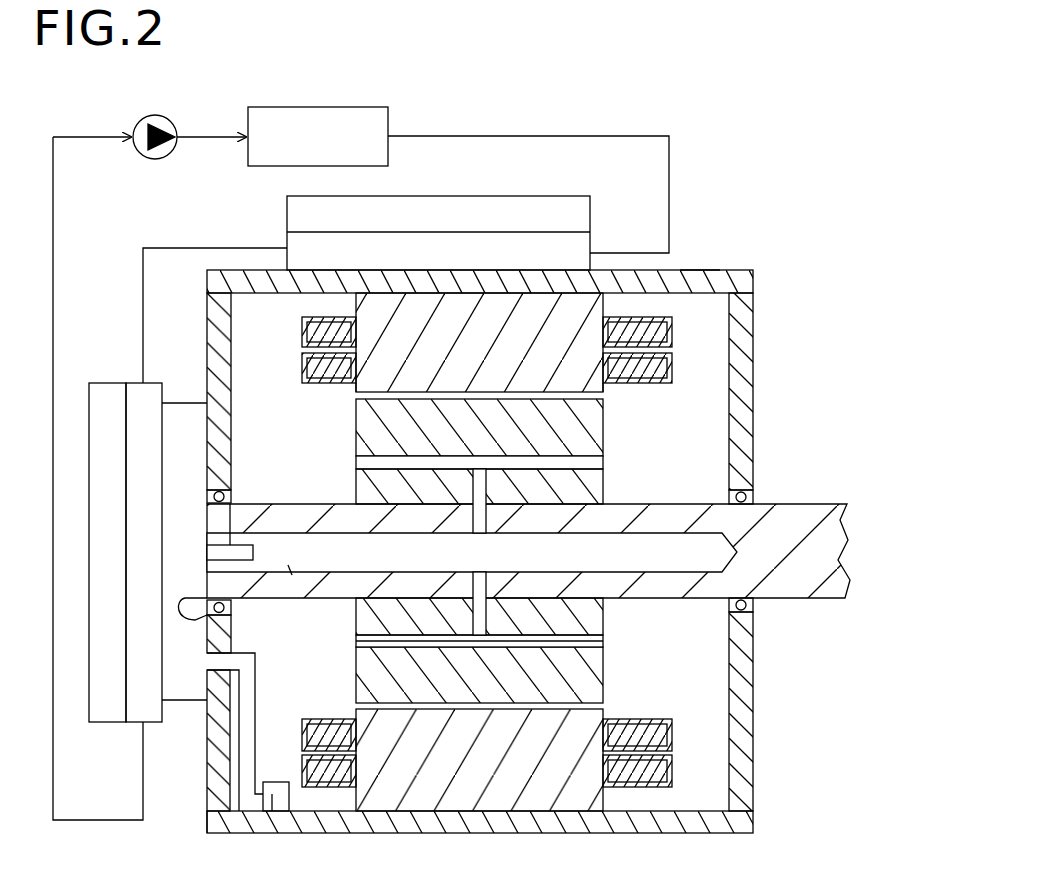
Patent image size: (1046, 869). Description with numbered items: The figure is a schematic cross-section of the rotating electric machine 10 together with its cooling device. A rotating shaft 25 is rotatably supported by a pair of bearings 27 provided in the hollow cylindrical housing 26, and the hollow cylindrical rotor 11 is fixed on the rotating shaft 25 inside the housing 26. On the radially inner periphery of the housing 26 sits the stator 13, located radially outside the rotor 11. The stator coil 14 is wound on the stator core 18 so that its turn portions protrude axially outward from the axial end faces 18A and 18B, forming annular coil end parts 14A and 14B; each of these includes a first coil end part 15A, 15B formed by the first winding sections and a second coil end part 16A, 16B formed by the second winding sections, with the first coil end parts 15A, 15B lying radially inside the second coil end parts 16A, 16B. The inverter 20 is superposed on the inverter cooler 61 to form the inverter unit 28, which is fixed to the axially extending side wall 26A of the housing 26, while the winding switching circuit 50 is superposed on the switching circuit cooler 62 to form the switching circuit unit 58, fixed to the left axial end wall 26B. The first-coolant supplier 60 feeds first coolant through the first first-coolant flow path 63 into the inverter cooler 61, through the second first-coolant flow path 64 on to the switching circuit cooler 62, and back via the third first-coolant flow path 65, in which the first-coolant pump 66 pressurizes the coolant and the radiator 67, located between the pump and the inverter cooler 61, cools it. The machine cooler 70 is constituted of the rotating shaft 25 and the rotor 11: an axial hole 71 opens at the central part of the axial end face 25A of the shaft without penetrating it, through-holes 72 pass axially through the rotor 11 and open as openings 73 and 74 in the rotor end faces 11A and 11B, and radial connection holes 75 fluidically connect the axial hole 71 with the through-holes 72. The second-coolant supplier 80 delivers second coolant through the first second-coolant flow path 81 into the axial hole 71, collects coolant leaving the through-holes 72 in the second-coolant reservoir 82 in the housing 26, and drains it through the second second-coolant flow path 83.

The rotating electric machine 10 is at (787, 272).
The rotor 11 is at (483, 556).
The axial end face of the rotor 11A is at (356, 690).
The axial end face of the rotor 11B is at (603, 695).
The stator 13 is at (372, 296).
The stator coil 14 is at (562, 547).
The coil end part 14A is at (296, 552).
The coil end part 14B is at (745, 547).
The first coil end part 15A is at (315, 383).
The first coil end part 15B is at (672, 368).
The second coil end part 16A is at (302, 330).
The second coil end part 16B is at (672, 327).
The stator core 18 is at (562, 550).
The axial end face of the stator core 18A is at (357, 393).
The axial end face of the stator core 18B is at (603, 392).
The inverter 20 is at (580, 196).
The rotating shaft 25 is at (822, 503).
The axial end face of the rotating shaft 25A is at (215, 615).
The housing 26 is at (753, 408).
The side wall of the housing 26A is at (700, 270).
The axial end wall of the housing 26B is at (207, 812).
The bearings 27 is at (745, 492).
The inverter unit 28 is at (530, 211).
The winding switching circuit 50 is at (100, 383).
The switching circuit unit 58 is at (114, 512).
The first-coolant supplier 60 is at (413, 466).
The inverter cooler 61 is at (590, 245).
The switching circuit cooler 62 is at (130, 383).
The first first-coolant flow path 63 is at (640, 132).
The second first-coolant flow path 64 is at (225, 248).
The third first-coolant flow path 65 is at (100, 820).
The first-coolant pump 66 is at (140, 115).
The radiator 67 is at (340, 107).
The machine cooler 70 is at (480, 556).
The axial hole 71 is at (297, 566).
The through-holes 72 is at (603, 460).
The openings 73 is at (352, 641).
The openings 74 is at (620, 645).
The connection holes 75 is at (490, 478).
The second-coolant supplier 80 is at (190, 403).
The first second-coolant flow path 81 is at (236, 545).
The second-coolant reservoir 82 is at (300, 811).
The second second-coolant flow path 83 is at (258, 800).